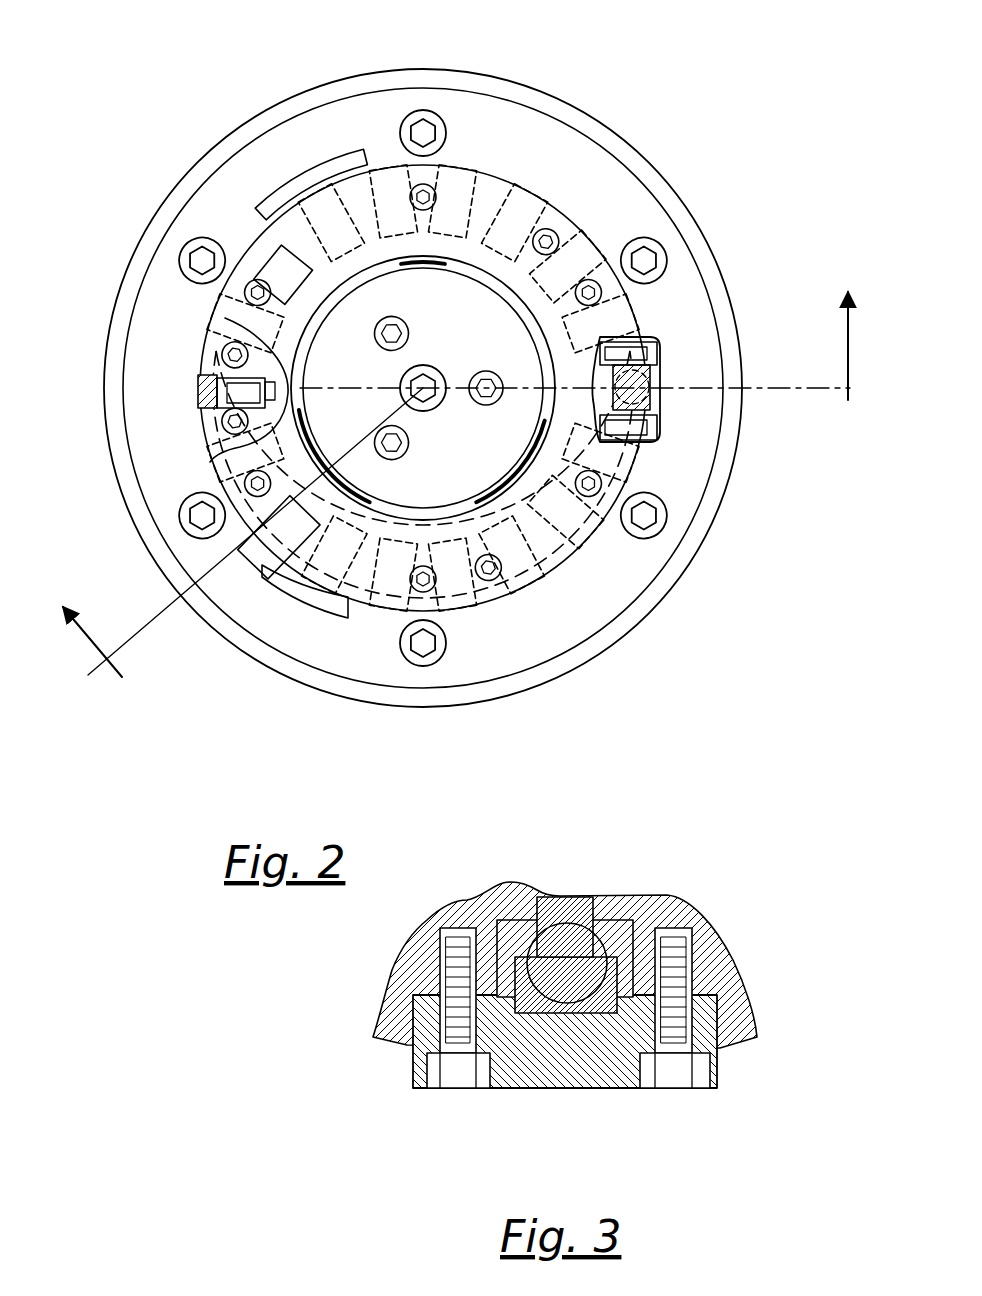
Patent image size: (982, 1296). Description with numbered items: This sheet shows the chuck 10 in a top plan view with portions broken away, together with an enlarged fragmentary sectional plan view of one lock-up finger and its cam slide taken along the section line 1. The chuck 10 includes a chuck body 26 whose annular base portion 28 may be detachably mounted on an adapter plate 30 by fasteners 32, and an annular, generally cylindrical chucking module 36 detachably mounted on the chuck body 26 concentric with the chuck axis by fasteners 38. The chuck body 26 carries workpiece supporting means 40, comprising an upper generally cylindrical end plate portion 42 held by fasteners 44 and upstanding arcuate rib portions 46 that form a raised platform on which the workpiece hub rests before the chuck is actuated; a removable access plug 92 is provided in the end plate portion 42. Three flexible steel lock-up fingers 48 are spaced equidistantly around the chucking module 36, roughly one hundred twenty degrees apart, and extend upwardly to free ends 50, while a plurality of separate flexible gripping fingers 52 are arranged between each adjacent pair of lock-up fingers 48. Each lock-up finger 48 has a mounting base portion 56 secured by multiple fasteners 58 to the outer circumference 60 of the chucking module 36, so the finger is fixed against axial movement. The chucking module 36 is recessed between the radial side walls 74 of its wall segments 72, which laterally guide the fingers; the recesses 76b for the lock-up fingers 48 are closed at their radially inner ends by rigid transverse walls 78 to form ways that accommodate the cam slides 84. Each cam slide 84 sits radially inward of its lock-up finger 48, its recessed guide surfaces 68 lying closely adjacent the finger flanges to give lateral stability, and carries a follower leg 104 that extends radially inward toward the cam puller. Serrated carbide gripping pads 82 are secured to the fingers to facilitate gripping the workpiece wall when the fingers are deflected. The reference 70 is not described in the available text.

In FIG. 2, the chuck 10 is at (244, 68).
In FIG. 2, the chuck body 26 is at (338, 80).
In FIG. 3, the chuck body 26 is at (742, 958).
In FIG. 2, the annular base portion 28 is at (605, 150).
In FIG. 2, the adapter plate 30 is at (557, 107).
In FIG. 2, the fasteners 32 is at (432, 112).
In FIG. 2, the chucking module 36 is at (198, 393).
In FIG. 3, the chucking module 36 is at (742, 1010).
In FIG. 2, the fasteners 38 is at (427, 183).
In FIG. 2, the workpiece supporting means 40 is at (343, 256).
In FIG. 2, the end plate portion 42 is at (412, 392).
In FIG. 2, the fasteners 44 is at (378, 333).
In FIG. 2, the arcuate rib portions 46 is at (423, 268).
In FIG. 2, the lock-up fingers 48 is at (258, 212).
In FIG. 3, the lock-up fingers 48 is at (597, 1096).
In FIG. 2, the free ends 50 is at (657, 355).
In FIG. 2, the gripping fingers 52 is at (373, 162).
In FIG. 3, the mounting base portion 56 is at (553, 1070).
In FIG. 3, the fasteners 58 is at (467, 1080).
In FIG. 3, the outer circumference 60 is at (388, 1045).
In FIG. 3, the recessed guide surfaces 68 is at (608, 1050).
In FIG. 3, the plate side surface 70 is at (400, 985).
In FIG. 2, the wall segments 72 is at (485, 180).
In FIG. 3, the radial side walls 74 is at (497, 890).
In FIG. 3, the finger accommodating recesses 76b is at (558, 896).
In FIG. 3, the transverse walls 78 is at (512, 895).
In FIG. 2, the serrated carbide gripping pads 82 is at (718, 390).
In FIG. 2, the cam slides 84 is at (580, 408).
In FIG. 3, the cam slides 84 is at (604, 925).
In FIG. 2, the access plug 92 is at (415, 372).
In FIG. 3, the follower leg 104 is at (562, 917).
In FIG. 2, the section line 1 is at (460, 510).